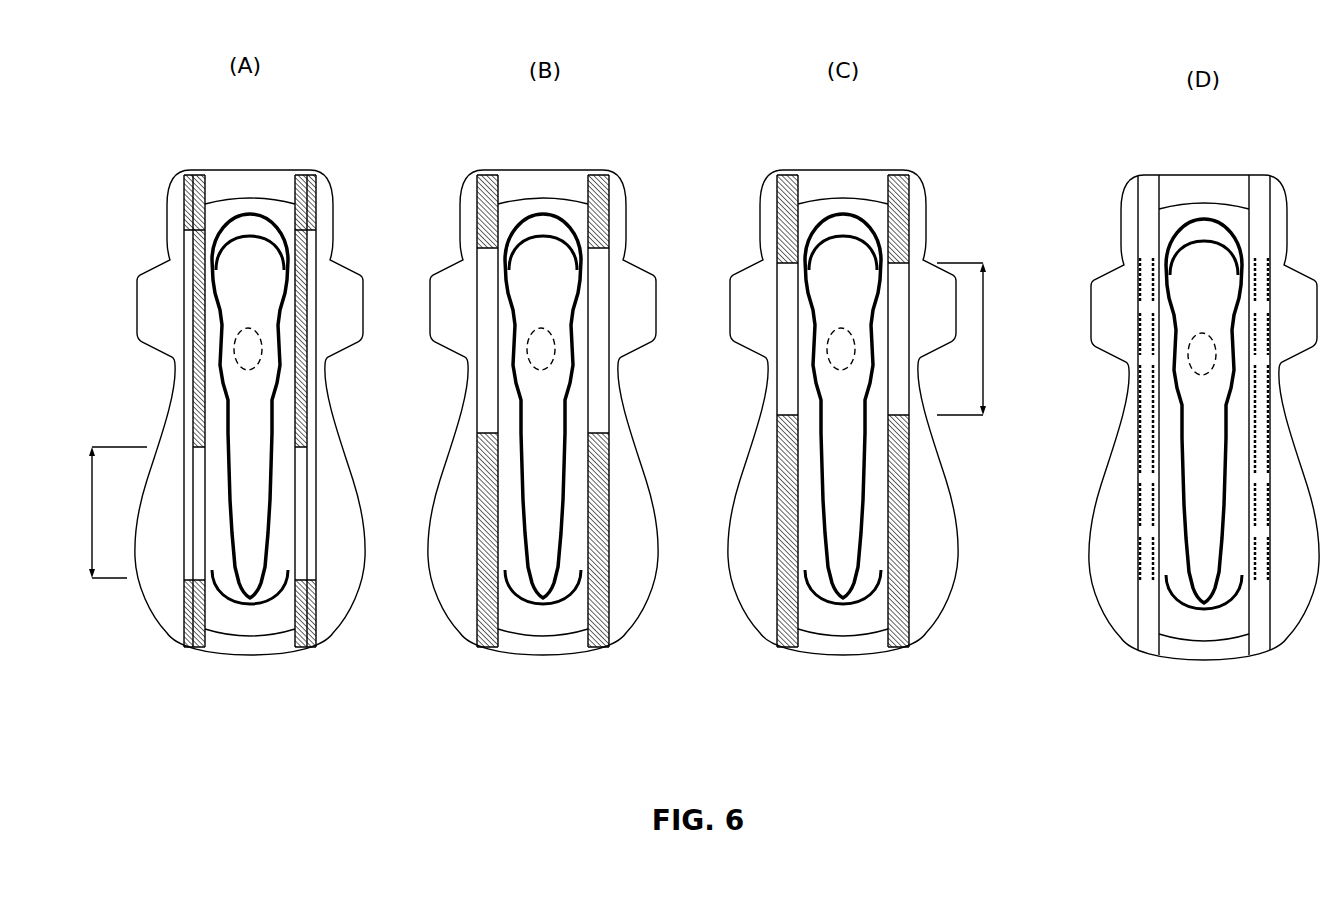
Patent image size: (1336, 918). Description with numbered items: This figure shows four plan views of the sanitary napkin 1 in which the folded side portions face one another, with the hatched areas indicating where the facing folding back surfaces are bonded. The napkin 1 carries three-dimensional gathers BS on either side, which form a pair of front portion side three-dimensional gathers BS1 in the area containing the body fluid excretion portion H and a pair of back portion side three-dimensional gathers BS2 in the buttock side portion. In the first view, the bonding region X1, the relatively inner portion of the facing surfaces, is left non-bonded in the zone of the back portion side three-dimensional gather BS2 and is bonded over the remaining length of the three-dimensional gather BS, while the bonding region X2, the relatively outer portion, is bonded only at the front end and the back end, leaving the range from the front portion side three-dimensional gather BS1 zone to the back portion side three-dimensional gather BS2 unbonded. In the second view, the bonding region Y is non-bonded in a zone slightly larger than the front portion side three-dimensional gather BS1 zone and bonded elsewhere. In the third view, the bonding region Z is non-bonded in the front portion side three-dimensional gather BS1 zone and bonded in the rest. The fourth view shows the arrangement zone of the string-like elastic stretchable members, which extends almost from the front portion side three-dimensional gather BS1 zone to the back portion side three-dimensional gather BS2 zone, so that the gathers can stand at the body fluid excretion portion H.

The sanitary napkin 1 is at (166, 193).
The body fluid excretion portion H is at (725, 324).
The three-dimensional gather BS is at (1132, 446).
The front portion side three-dimensional gather BS1 is at (988, 349).
The back portion side three-dimensional gather BS2 is at (94, 497).
The bonding region X1 is at (290, 613).
The bonding region X2 is at (333, 650).
The bonding region Y is at (597, 675).
The bonding region Z is at (900, 675).